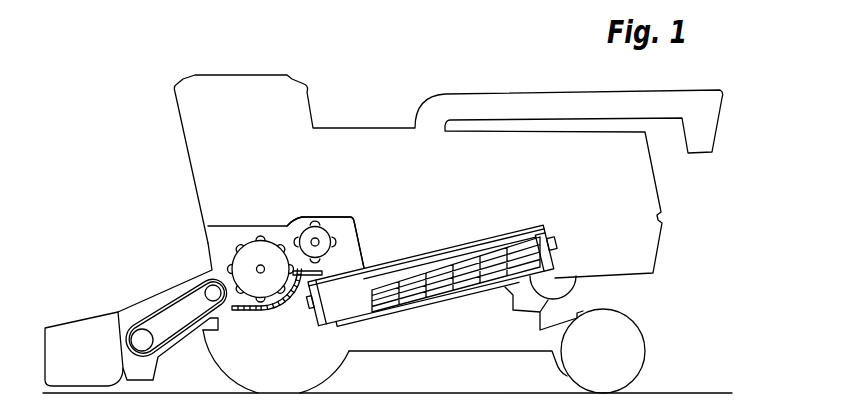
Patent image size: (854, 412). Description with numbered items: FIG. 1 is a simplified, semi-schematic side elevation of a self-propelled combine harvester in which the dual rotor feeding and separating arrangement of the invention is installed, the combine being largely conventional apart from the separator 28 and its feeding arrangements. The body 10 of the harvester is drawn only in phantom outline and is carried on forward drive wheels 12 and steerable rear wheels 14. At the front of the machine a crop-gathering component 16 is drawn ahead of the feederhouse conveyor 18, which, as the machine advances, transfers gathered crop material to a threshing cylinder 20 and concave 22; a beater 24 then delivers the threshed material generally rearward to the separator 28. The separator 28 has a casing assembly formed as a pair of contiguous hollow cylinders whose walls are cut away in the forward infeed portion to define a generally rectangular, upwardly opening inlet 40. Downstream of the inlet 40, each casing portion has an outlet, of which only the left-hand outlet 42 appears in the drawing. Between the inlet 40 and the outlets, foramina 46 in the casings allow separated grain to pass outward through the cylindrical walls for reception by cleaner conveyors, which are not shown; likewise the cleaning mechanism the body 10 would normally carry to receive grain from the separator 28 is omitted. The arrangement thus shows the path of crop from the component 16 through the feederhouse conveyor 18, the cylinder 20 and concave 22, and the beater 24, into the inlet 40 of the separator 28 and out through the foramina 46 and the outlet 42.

The body 10 is at (378, 128).
The forward drive wheels 12 is at (347, 363).
The steerable rear wheels 14 is at (645, 357).
The header 16 is at (87, 306).
The feederhouse conveyor 18 is at (168, 287).
The cylinder 20 is at (244, 240).
The concave 22 is at (272, 313).
The beater 24 is at (299, 225).
The separator 28 is at (433, 271).
The inlet 40 is at (344, 256).
The outlet 42 is at (553, 291).
The foramina 46 is at (437, 300).